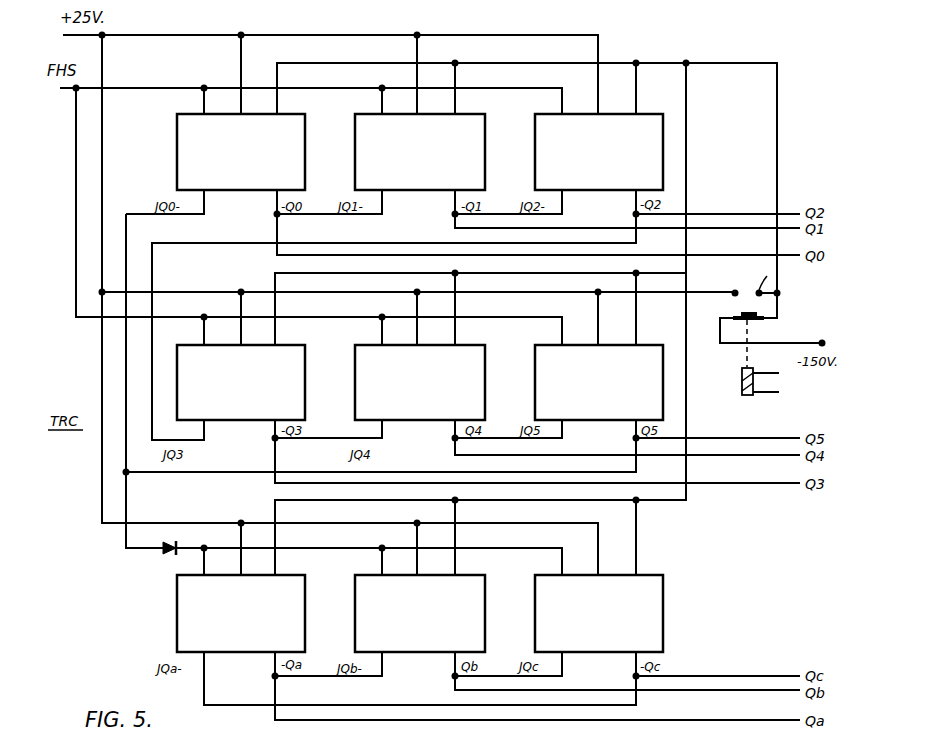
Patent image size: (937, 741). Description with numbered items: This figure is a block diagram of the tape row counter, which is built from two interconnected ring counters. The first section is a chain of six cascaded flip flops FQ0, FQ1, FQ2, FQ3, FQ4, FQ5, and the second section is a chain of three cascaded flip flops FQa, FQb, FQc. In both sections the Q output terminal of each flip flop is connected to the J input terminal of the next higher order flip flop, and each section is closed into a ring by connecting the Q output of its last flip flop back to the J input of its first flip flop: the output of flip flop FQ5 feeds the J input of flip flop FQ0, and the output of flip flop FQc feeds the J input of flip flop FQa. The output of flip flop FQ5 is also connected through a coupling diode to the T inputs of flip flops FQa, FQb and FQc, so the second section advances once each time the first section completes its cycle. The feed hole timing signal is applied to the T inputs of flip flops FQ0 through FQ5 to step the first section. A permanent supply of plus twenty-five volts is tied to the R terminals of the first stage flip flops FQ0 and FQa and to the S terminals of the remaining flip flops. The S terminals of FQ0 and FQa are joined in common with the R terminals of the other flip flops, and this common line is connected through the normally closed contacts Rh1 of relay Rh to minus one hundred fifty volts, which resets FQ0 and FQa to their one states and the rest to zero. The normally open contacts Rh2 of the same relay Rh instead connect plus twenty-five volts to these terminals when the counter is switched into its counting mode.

The flip flop FQ0 is at (241, 152).
The flip flop FQ1 is at (420, 152).
The flip flop FQ2 is at (599, 152).
The flip flop FQ3 is at (241, 382).
The flip flop FQ4 is at (420, 382).
The flip flop FQ5 is at (599, 382).
The flip flop FQa is at (241, 613).
The flip flop FQb is at (420, 613).
The flip flop FQc is at (599, 613).
The relay Rh is at (760, 371).
The normally closed contacts Rh1 is at (762, 320).
The normally open contacts Rh2 is at (751, 279).